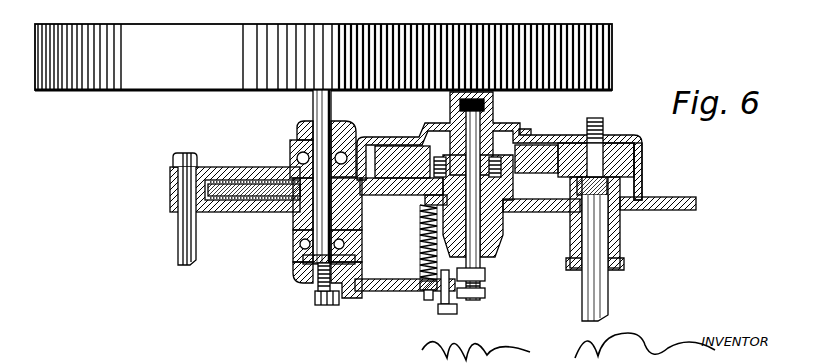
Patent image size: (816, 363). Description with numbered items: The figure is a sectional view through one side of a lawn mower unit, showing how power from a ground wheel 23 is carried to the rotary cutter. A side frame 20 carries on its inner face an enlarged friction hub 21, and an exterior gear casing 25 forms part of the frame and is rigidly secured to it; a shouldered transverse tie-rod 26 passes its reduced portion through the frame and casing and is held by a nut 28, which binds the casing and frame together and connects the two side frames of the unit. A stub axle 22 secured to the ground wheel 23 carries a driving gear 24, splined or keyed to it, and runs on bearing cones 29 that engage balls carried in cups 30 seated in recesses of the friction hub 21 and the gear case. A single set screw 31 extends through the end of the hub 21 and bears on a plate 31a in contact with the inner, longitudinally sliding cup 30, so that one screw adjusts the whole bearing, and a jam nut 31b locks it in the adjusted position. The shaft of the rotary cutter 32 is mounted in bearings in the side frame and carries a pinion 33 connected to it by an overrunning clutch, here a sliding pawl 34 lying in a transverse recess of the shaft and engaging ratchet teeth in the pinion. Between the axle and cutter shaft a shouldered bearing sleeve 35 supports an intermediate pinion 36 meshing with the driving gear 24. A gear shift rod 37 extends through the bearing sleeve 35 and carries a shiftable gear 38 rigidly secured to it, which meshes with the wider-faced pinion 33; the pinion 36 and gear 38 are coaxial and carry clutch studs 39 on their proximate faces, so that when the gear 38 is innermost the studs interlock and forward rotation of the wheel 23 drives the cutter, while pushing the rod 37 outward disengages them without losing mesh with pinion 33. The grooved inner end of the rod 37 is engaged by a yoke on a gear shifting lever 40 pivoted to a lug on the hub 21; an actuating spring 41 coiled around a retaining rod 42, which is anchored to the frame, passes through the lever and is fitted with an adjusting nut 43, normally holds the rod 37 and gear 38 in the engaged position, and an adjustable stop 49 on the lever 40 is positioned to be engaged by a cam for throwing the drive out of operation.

The side frame 20 is at (247, 212).
The friction hub 21 is at (294, 262).
The stub axle 22 is at (318, 105).
The ground wheel 23 is at (148, 77).
The driving gear 24 is at (215, 181).
The gear casing 25 is at (388, 137).
The tie-rod 26 is at (182, 240).
The nut 28 is at (178, 158).
The bearing cone 29 is at (300, 166).
The cup 30 is at (346, 140).
The set screw 31 is at (322, 306).
The plate 31a is at (307, 266).
The jam nut 31b is at (333, 292).
The shaft of the rotary cutter 32 is at (604, 300).
The pinion 33 is at (612, 152).
The sliding pawl 34 is at (642, 160).
The bearing sleeve 35 is at (505, 236).
The intermediate pinion 36 is at (505, 222).
The gear shift rod 37 is at (486, 270).
The shiftable gear 38 is at (524, 129).
The clutch stud 39 is at (447, 152).
The gear shifting lever 40 is at (397, 292).
The actuating spring 41 is at (420, 254).
The retaining rod 42 is at (427, 292).
The adjusting nut 43 is at (422, 301).
The adjustable stop 49 is at (457, 309).